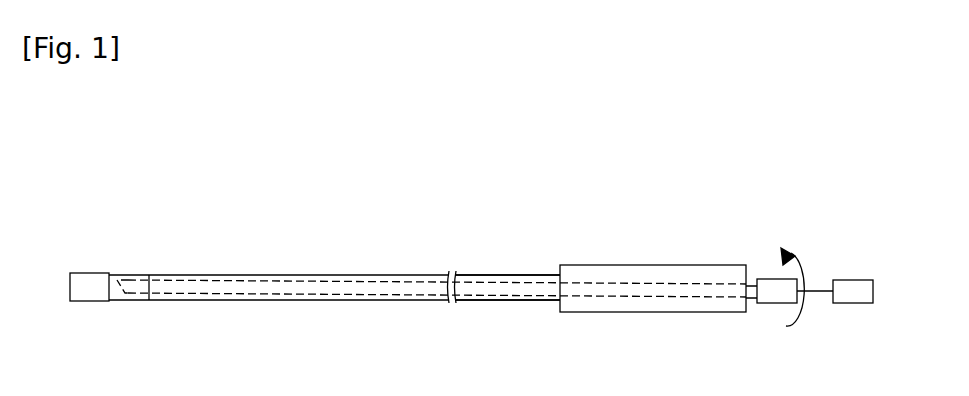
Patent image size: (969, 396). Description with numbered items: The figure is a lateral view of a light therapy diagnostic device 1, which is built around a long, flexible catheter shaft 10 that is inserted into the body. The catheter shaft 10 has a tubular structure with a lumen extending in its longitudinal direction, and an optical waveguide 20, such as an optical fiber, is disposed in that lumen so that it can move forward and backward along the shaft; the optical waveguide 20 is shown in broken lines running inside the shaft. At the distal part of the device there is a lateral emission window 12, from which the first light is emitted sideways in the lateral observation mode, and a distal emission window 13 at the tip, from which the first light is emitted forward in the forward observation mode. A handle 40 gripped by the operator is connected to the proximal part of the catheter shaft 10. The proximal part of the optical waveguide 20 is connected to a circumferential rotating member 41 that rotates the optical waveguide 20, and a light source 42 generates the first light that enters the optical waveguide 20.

The light therapy diagnostic device 1 is at (94, 211).
The catheter shaft 10 is at (394, 276).
The lateral emission window 12 is at (129, 278).
The distal emission window 13 is at (69, 287).
The optical waveguide 20 is at (293, 279).
The handle 40 is at (619, 265).
The circumferential rotating member 41 is at (777, 304).
The light source 42 is at (853, 304).